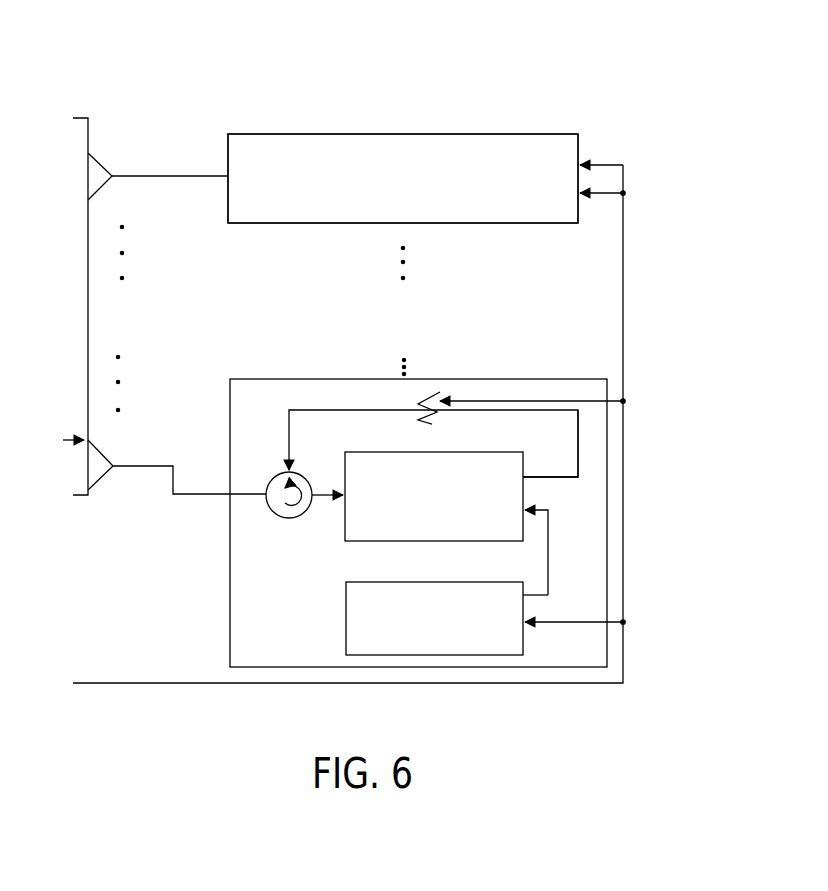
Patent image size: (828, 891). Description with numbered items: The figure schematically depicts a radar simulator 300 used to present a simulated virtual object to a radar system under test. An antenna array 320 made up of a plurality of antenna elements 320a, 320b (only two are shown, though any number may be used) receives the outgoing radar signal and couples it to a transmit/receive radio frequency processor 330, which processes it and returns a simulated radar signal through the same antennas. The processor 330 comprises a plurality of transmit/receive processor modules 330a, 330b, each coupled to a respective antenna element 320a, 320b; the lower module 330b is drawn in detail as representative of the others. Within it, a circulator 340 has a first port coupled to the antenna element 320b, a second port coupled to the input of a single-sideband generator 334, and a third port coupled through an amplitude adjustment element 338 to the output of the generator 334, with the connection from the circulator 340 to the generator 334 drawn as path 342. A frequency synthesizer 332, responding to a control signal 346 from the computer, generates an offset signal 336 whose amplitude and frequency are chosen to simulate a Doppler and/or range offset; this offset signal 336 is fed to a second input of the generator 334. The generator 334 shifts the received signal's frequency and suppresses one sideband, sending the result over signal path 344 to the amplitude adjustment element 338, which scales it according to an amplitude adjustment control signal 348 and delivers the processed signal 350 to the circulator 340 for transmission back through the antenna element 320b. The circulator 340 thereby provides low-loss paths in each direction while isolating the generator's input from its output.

The radar simulator 300 is at (644, 90).
The antenna array 320 is at (119, 87).
The antenna element 320a is at (104, 160).
The antenna element 320b is at (107, 452).
The transmit/receive radio frequency processor 330 is at (436, 131).
The transmit/receive processor module 330a is at (521, 134).
The transmit/receive processor module 330b is at (609, 386).
The frequency synthesizer 332 is at (346, 620).
The single-sideband generator 334 is at (345, 543).
The offset signal 336 is at (549, 511).
The amplitude adjustment element 338 is at (425, 397).
The circulator 340 is at (297, 471).
The receive path 342 is at (335, 500).
The signal path 344 is at (576, 447).
The control signal 346 is at (565, 620).
The amplitude adjustment control signal 348 is at (527, 400).
The processed signal 350 is at (298, 406).